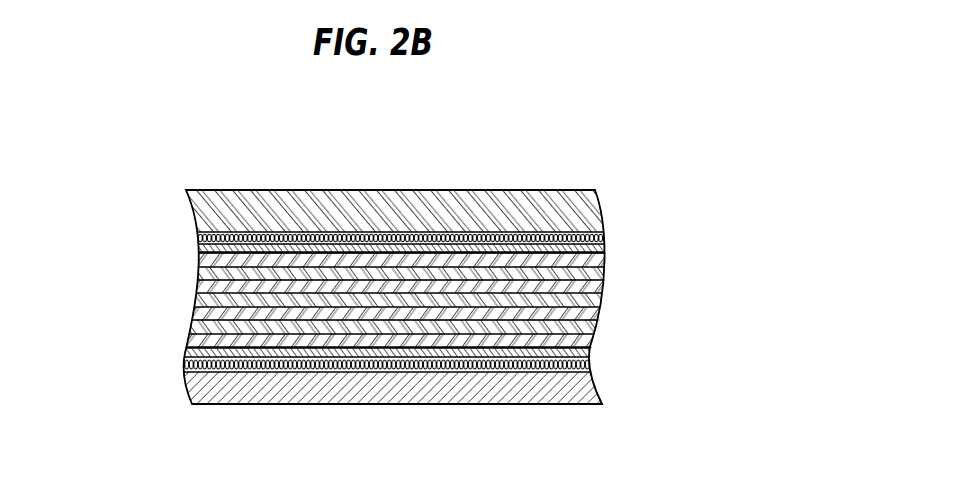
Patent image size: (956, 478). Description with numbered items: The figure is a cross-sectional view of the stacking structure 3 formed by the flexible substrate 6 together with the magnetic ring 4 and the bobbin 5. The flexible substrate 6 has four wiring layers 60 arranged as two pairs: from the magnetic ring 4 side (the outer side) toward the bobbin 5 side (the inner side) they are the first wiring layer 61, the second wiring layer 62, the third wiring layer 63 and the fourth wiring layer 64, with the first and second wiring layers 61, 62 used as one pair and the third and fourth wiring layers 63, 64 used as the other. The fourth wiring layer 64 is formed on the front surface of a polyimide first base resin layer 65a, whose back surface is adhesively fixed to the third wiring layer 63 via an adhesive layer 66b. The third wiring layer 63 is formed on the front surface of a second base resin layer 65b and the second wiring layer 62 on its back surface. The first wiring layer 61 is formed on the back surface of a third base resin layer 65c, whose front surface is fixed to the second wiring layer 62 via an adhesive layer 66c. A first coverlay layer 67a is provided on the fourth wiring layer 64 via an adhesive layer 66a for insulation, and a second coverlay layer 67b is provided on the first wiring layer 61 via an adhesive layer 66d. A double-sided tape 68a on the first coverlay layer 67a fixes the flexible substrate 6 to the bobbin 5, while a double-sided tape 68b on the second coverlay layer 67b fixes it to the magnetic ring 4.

The laminated battery body 3 is at (169, 150).
The magnetic ring 4 is at (611, 393).
The bobbin 5 is at (596, 189).
The flexible substrate 6 is at (153, 380).
The wiring layer 60 is at (422, 301).
The first wiring layer 61 is at (592, 342).
The second wiring layer 62 is at (593, 313).
The third wiring layer 63 is at (608, 287).
The fourth wiring layer 64 is at (610, 260).
The first base resin layer 65a is at (203, 273).
The second base resin layer 65b is at (192, 300).
The third base resin layer 65c is at (185, 327).
The adhesive layer 66a is at (380, 253).
The adhesive layer 66b is at (428, 280).
The adhesive layer 66c is at (482, 322).
The adhesive layer 66d is at (537, 348).
The first coverlay layer 67a is at (202, 247).
The second coverlay layer 67b is at (187, 355).
The double-sided tape 68a is at (607, 235).
The double-sided tape 68b is at (593, 370).